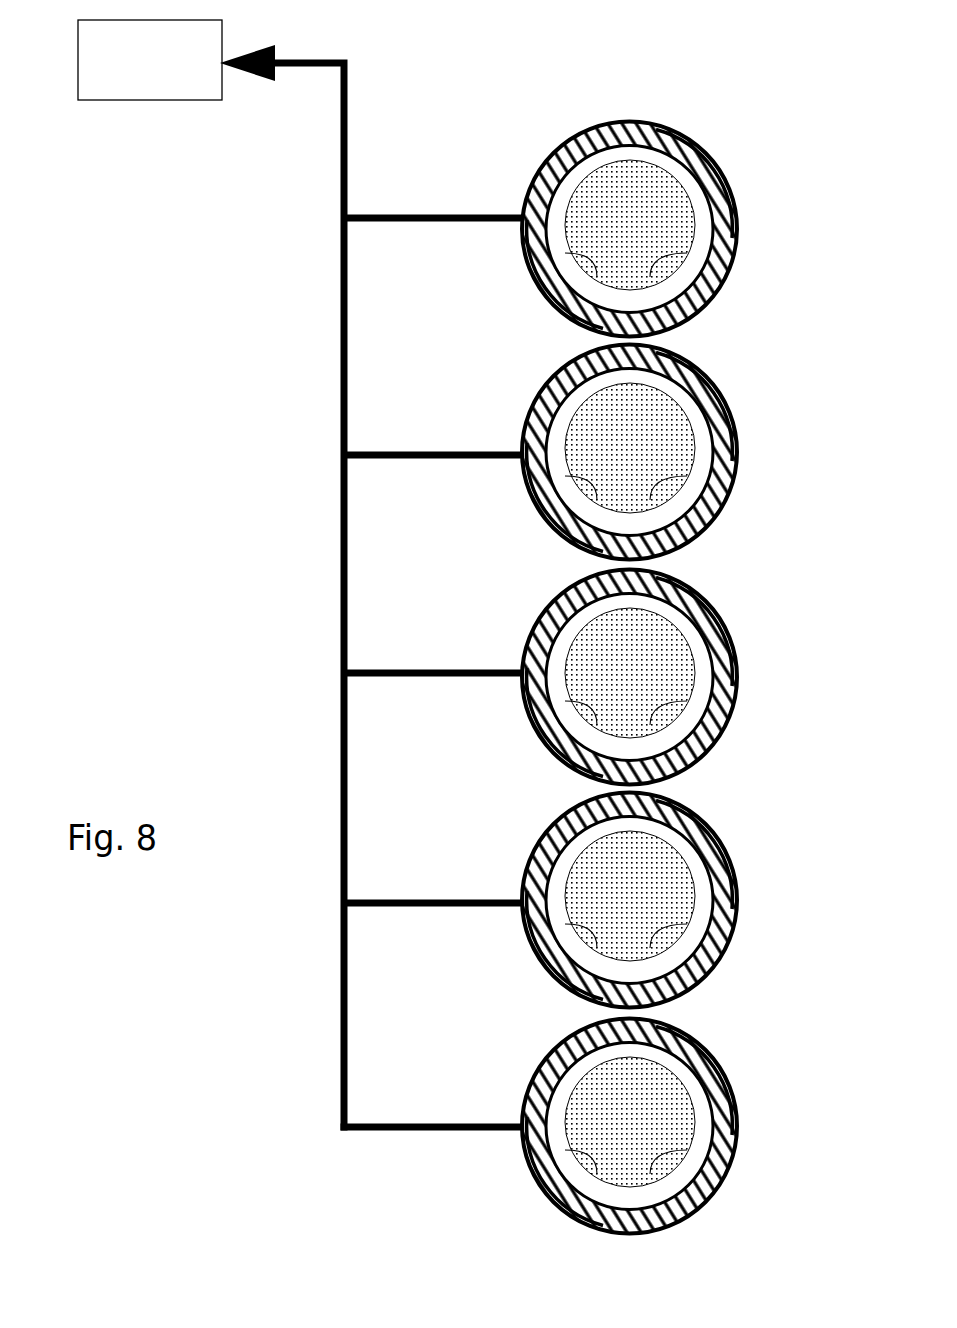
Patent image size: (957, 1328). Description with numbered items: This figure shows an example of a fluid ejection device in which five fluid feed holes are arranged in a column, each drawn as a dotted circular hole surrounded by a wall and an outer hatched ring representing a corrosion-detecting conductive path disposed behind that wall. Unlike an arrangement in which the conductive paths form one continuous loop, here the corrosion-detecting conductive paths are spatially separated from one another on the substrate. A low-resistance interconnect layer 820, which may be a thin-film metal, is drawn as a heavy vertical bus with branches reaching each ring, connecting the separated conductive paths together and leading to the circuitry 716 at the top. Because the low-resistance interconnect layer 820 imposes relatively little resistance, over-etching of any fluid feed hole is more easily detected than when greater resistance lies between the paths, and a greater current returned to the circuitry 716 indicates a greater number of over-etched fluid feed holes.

The circuitry 716 is at (126, 89).
The low-resistance interconnect layer 820 is at (332, 402).